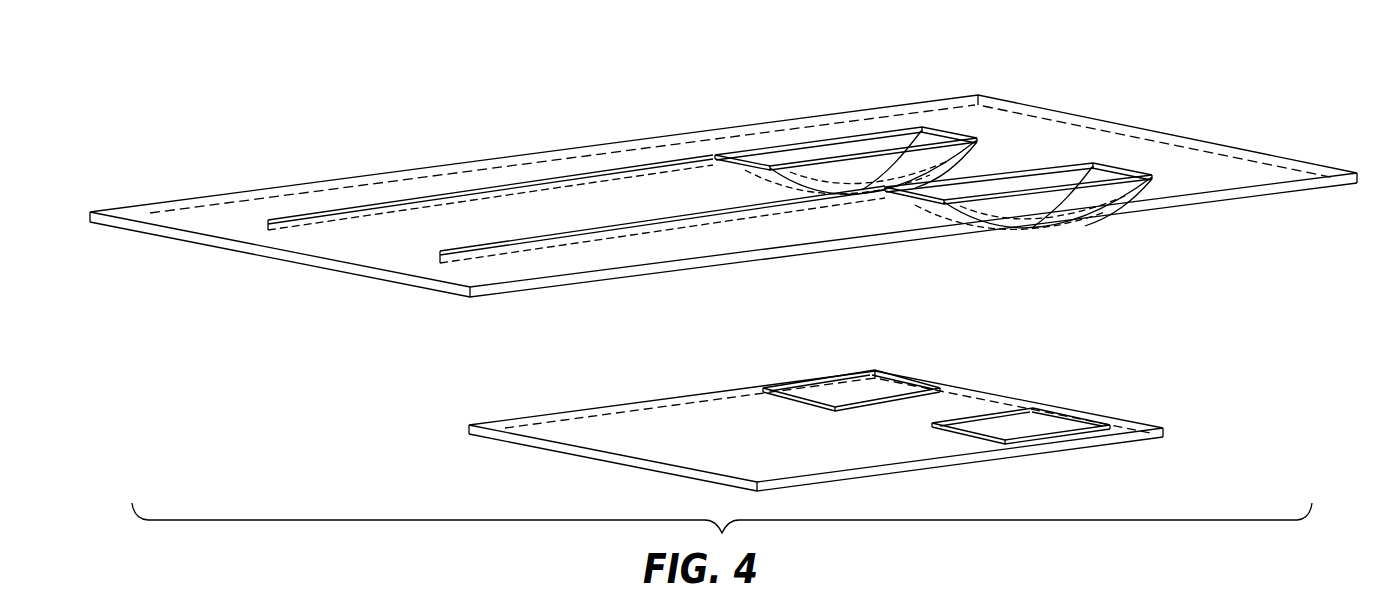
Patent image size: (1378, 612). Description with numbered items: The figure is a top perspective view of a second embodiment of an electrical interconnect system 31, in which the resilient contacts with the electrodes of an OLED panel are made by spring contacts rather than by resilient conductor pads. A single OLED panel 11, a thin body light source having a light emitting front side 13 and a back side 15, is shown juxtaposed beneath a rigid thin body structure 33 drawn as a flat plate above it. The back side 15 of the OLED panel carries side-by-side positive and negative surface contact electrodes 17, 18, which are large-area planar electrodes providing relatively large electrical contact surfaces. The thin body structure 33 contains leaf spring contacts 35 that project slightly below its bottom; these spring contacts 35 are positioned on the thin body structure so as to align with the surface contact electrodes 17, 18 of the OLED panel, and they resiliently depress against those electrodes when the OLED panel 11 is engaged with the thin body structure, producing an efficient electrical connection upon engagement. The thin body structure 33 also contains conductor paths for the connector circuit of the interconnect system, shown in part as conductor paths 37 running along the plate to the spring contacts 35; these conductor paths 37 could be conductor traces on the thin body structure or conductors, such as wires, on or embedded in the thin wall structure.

The electrical interconnect system 31 is at (769, 68).
The rigid thin body structure 33 is at (983, 115).
The leaf spring contacts 35 is at (960, 165).
The conductor paths 37 is at (660, 233).
The OLED panel 11 is at (588, 452).
The light emitting front side 13 is at (650, 420).
The back side 15 is at (855, 480).
The positive surface contact electrode 17 is at (827, 392).
The negative surface contact electrode 18 is at (1060, 425).